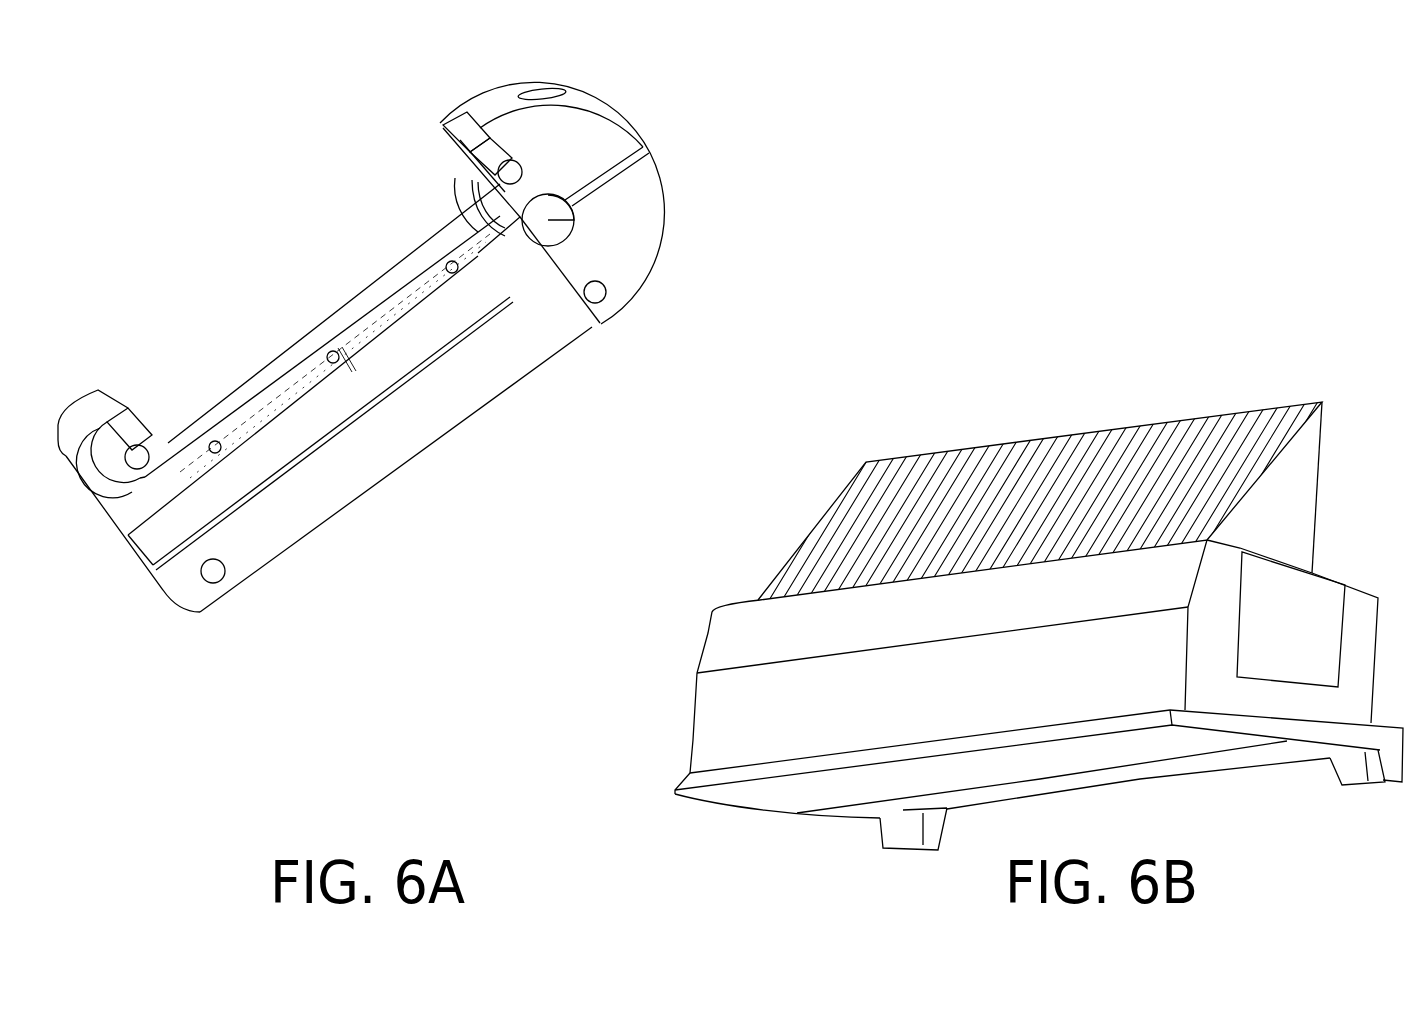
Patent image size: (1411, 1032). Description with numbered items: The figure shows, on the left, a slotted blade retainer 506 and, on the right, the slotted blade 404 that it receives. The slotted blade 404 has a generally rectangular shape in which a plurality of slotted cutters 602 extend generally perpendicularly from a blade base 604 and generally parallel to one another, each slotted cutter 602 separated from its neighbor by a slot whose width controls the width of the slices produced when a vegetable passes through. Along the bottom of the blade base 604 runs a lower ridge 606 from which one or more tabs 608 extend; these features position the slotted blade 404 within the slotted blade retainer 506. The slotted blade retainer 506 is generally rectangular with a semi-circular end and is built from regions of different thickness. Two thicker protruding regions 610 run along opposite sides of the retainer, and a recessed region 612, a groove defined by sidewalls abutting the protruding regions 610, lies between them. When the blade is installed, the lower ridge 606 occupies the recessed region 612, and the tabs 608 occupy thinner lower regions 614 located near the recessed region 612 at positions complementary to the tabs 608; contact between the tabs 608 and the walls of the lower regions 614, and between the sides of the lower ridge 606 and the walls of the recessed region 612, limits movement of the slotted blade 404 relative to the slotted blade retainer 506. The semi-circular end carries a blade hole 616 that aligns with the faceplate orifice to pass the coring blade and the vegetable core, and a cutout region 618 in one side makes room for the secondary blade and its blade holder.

In FIG. 6A, the slotted blade retainer 506 is at (449, 343).
In FIG. 6A, the cutout region 618 is at (372, 200).
In FIG. 6A, the lower region 614 is at (483, 226).
In FIG. 6A, the protruding region 610 is at (97, 447).
In FIG. 6A, the recessed region 612 is at (387, 371).
In FIG. 6A, the blade hole 616 is at (550, 213).
In FIG. 6B, the slotted blade 404 is at (952, 567).
In FIG. 6B, the slotted cutters 602 is at (992, 452).
In FIG. 6B, the blade base 604 is at (723, 687).
In FIG. 6B, the lower ridge 606 is at (677, 790).
In FIG. 6B, the tabs 608 is at (940, 835).